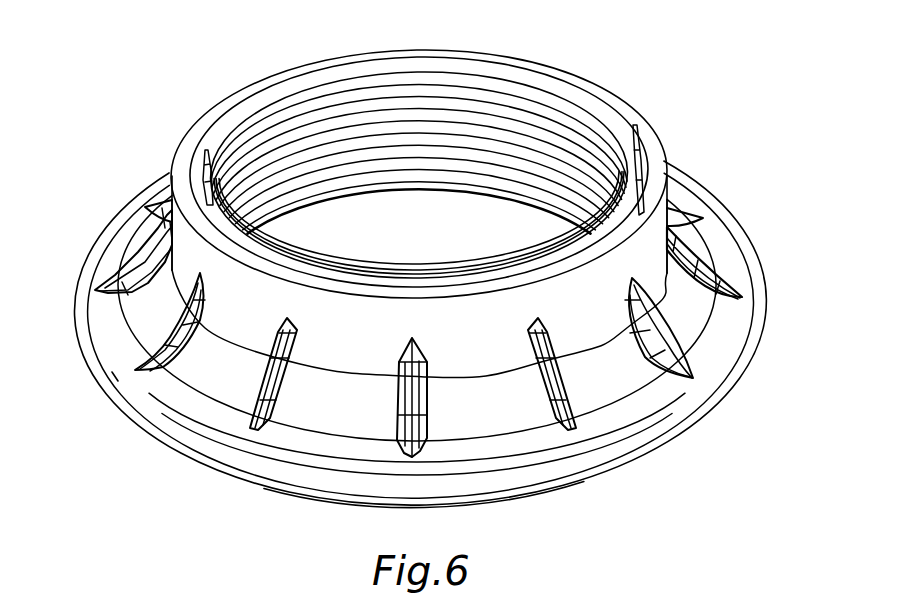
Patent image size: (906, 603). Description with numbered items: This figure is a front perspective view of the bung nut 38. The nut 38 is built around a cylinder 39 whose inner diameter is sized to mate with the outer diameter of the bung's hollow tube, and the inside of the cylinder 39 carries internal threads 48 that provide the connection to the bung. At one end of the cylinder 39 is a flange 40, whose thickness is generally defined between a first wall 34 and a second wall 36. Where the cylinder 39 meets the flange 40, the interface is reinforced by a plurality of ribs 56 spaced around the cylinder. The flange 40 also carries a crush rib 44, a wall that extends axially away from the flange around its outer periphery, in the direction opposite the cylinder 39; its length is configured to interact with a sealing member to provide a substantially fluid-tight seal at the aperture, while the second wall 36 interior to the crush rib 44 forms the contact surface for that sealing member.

The bung nut 38 is at (258, 36).
The internal threads 48 is at (551, 127).
The cylinder 39 is at (643, 279).
The first wall 34 is at (660, 397).
The flange 40 is at (103, 257).
The crush rib 44 is at (85, 363).
The second wall 36 is at (583, 483).
The ribs 56 is at (700, 262).